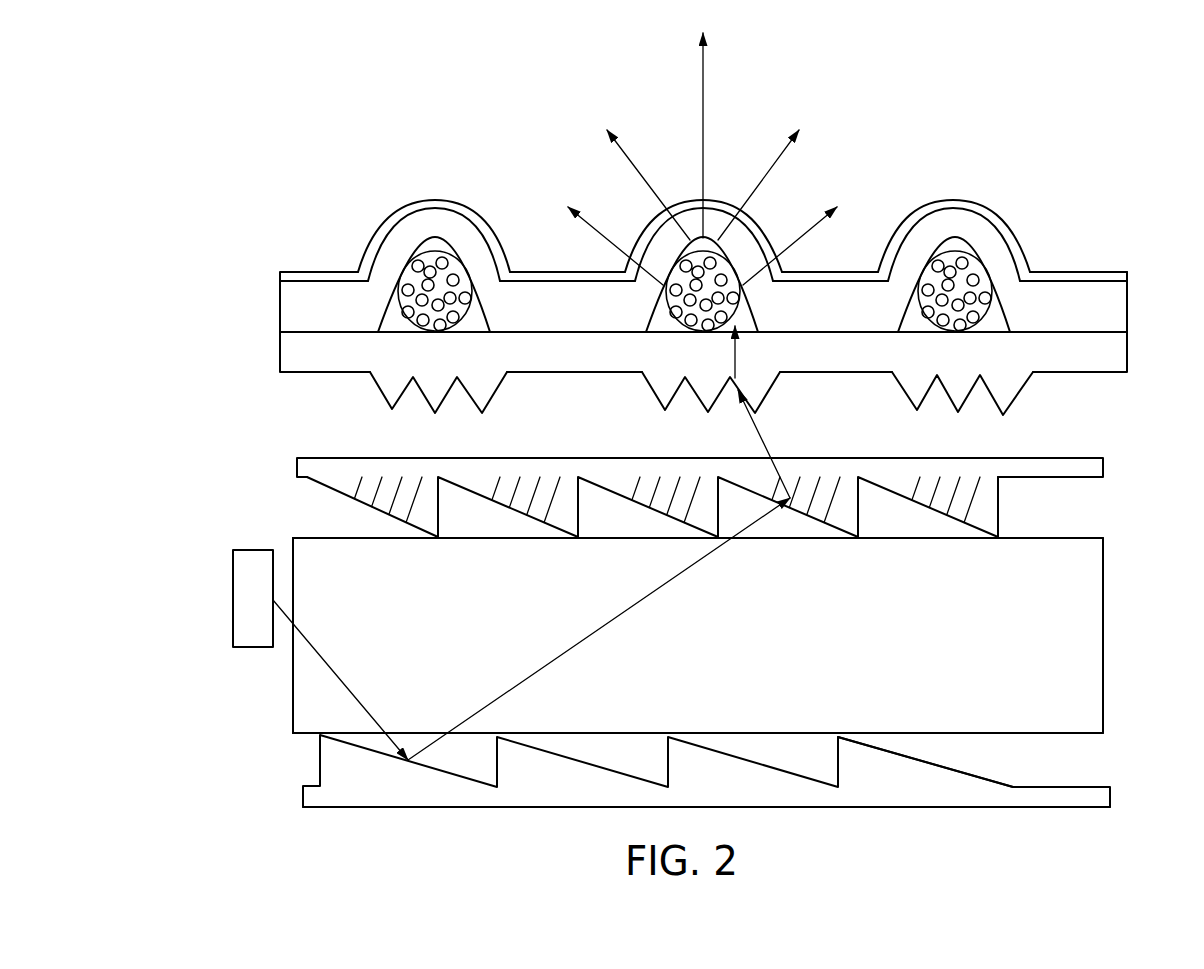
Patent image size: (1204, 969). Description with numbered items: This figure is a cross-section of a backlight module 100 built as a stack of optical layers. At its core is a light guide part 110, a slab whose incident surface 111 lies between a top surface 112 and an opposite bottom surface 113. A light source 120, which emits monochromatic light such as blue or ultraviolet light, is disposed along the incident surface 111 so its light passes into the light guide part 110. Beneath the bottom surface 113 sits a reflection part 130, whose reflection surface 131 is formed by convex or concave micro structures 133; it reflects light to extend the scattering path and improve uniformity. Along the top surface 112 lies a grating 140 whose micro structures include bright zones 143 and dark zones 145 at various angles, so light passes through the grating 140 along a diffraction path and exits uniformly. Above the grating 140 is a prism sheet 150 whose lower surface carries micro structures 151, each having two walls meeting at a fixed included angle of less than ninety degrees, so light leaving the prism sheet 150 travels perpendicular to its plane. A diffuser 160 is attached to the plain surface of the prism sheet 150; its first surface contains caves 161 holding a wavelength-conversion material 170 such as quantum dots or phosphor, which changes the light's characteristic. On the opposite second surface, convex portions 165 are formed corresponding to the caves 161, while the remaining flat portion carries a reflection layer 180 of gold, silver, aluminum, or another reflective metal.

The backlight module 100 is at (172, 125).
The light guide part 110 is at (701, 636).
The incident surface 111 is at (295, 683).
The top surface 112 is at (1072, 536).
The bottom surface 113 is at (1072, 736).
The light source 120 is at (230, 598).
The reflection part 130 is at (665, 789).
The reflection surface 131 is at (960, 768).
The micro structures 133 is at (890, 765).
The grating 140 is at (654, 488).
The bright zones 143 is at (643, 493).
The dark zones 145 is at (357, 488).
The prism sheet 150 is at (659, 392).
The micro structures 151 is at (396, 395).
The diffuser 160 is at (659, 231).
The caves 161 is at (1000, 324).
The convex portions 165 is at (953, 197).
The wavelength-conversion material 170 is at (977, 244).
The reflection layer 180 is at (1132, 274).